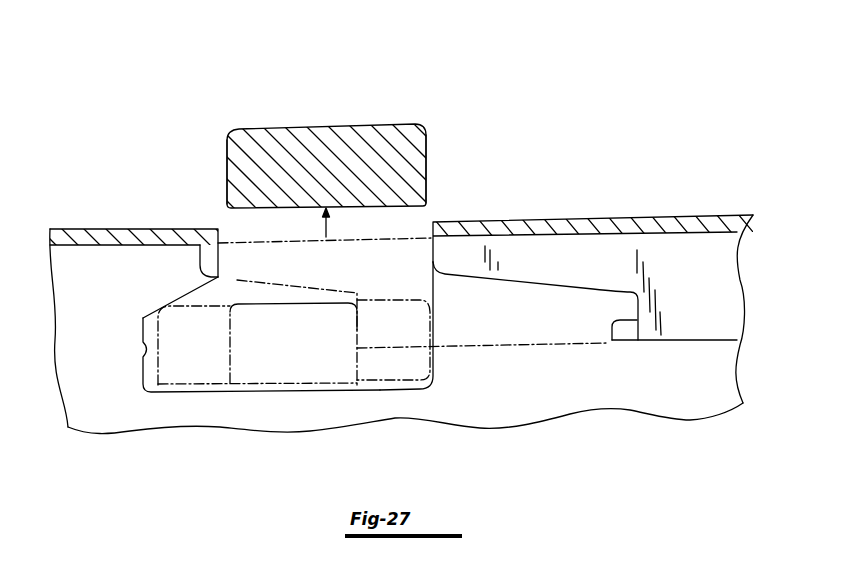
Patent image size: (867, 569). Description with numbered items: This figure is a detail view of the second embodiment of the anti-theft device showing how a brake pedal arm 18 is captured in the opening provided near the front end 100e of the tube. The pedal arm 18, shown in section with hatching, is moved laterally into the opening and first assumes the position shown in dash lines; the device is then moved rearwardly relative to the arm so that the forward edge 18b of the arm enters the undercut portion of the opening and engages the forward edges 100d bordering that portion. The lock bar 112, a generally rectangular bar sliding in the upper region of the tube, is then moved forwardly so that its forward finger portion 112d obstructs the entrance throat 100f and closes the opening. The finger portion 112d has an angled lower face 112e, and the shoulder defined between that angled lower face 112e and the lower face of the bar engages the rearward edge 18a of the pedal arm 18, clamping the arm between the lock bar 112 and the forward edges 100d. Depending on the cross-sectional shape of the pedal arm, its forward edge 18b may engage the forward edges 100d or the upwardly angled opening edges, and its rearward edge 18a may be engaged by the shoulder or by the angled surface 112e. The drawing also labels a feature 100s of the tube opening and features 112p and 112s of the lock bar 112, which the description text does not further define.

The pedal arm 18 is at (359, 92).
The rearward edge of the pedal arm 18a is at (427, 170).
The forward edge of the pedal arm 18b is at (227, 170).
The forward edges 100d is at (143, 342).
The front end 100e is at (430, 354).
The entrance throat 100f is at (195, 330).
The pocket shoulder 100s is at (220, 286).
The lock bar 112 is at (703, 273).
The forward finger portion 112d is at (543, 250).
The angled lower face 112e is at (595, 291).
The second body lip 112p is at (612, 341).
The second body step surface 112s is at (670, 341).